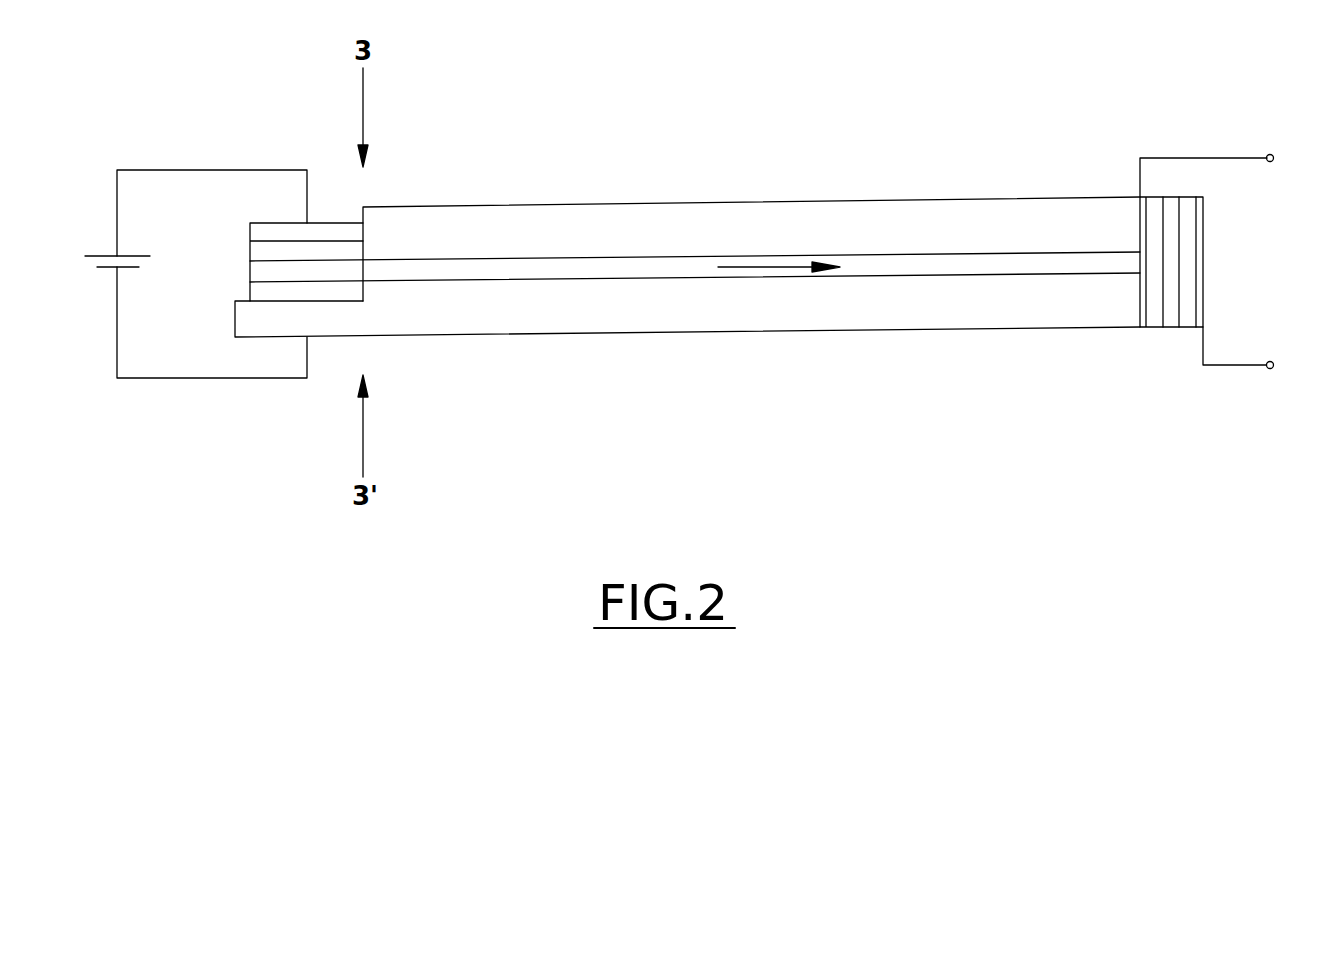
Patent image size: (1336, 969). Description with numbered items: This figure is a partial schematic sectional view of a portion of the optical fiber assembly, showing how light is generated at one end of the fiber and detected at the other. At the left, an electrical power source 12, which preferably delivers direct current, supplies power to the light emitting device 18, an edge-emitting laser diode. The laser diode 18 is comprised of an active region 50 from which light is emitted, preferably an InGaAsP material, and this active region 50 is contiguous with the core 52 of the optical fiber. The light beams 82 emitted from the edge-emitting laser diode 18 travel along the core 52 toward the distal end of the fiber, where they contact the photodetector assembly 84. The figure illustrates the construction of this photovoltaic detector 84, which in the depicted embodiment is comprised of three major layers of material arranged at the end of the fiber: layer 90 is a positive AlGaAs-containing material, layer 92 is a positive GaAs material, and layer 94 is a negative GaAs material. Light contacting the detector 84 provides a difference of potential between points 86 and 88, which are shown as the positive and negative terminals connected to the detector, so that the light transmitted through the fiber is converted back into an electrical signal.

The electrical power source 12 is at (108, 270).
The light emitting device 18 is at (250, 242).
The active region 50 is at (310, 271).
The core 52 is at (519, 273).
The light beams 82 is at (753, 267).
The photodetector assembly 84 is at (1187, 150).
The point 86 is at (1274, 158).
The point 88 is at (1274, 365).
The layer 90 is at (1155, 323).
The layer 92 is at (1172, 318).
The layer 94 is at (1189, 318).